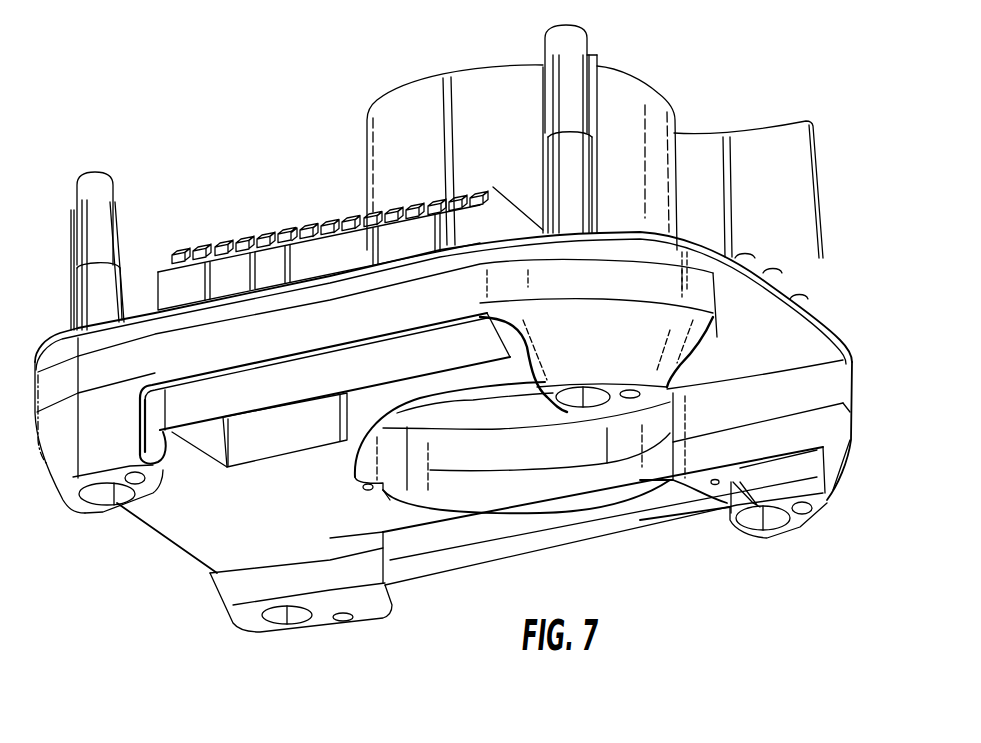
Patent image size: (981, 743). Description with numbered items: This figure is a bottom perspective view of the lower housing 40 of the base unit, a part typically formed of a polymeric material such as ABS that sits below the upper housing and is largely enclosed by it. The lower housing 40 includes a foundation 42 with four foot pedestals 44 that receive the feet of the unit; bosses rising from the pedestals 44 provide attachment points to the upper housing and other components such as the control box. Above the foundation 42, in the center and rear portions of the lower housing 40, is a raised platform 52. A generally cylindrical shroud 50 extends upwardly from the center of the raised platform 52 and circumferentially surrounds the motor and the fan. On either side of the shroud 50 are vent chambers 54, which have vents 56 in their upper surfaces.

The lower housing 40 is at (862, 312).
The foundation 42 is at (205, 550).
The foot pedestals 44 is at (60, 462).
The shroud 50 is at (648, 103).
The raised platform 52 is at (773, 337).
The vent chambers 54 is at (235, 447).
The vents 56 is at (257, 238).